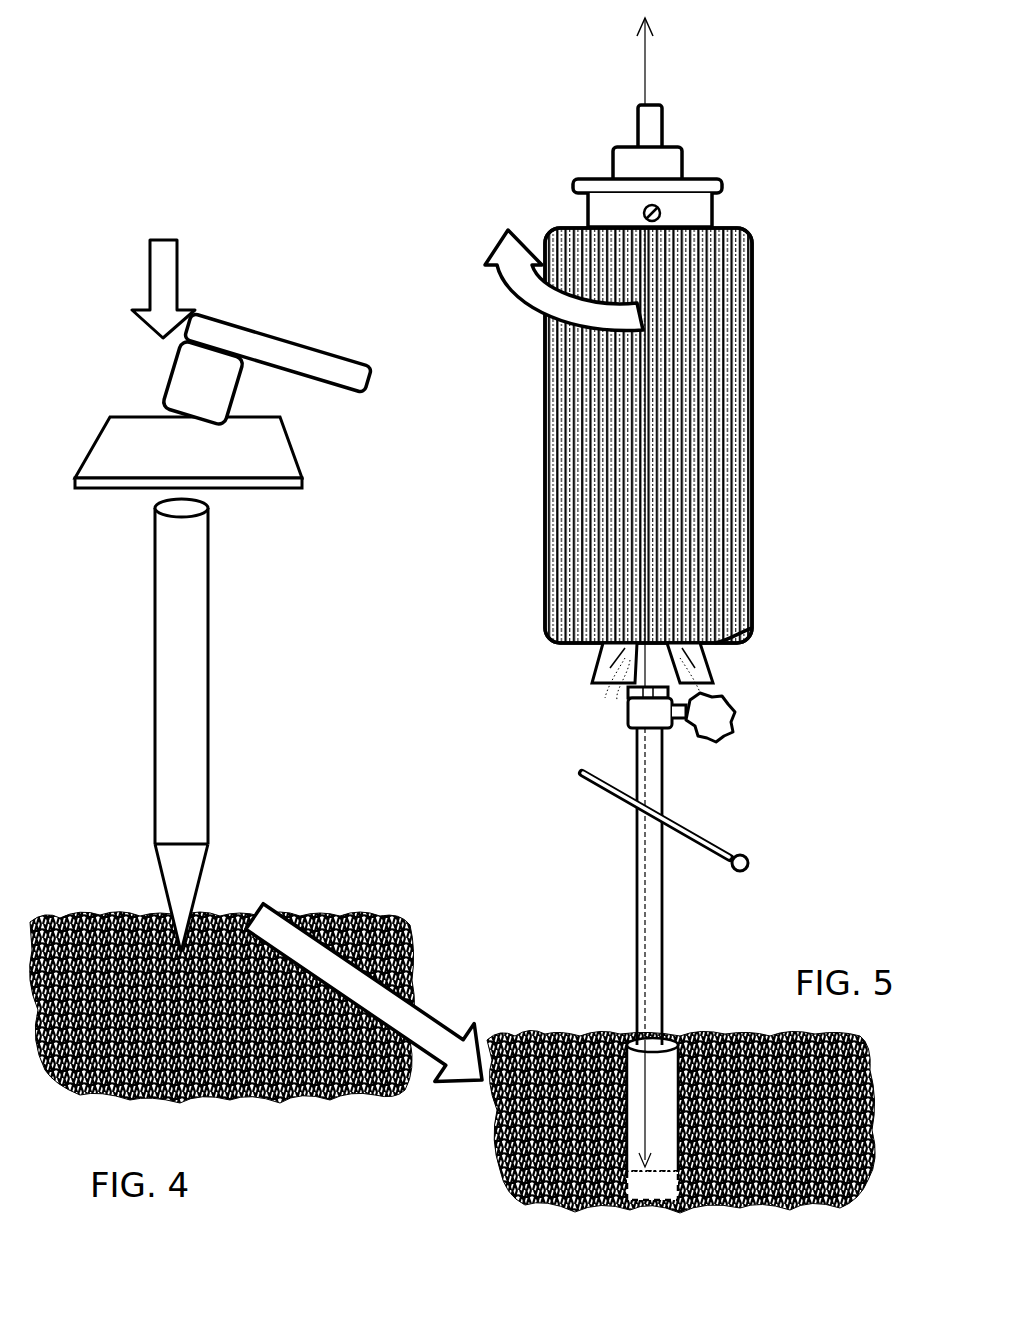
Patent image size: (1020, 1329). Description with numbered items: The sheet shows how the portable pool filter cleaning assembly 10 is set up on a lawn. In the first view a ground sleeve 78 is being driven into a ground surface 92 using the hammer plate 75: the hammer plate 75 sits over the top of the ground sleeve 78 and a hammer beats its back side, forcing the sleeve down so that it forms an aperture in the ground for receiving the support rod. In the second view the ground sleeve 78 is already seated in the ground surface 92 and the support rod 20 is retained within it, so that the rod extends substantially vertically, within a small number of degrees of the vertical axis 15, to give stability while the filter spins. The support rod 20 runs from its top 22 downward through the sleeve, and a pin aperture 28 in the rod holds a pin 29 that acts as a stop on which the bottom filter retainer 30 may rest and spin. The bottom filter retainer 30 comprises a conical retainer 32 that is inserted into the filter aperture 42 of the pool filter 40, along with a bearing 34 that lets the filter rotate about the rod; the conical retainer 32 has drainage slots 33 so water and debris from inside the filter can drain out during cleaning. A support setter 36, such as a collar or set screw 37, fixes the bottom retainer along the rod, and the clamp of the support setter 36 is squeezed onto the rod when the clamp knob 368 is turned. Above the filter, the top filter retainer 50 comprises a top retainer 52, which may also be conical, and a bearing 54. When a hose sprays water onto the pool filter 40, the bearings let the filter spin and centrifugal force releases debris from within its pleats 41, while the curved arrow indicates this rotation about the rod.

In FIG. 5, the portable pool filter cleaning assembly 10 is at (522, 136).
In FIG. 5, the vertical axis 15 is at (640, 59).
In FIG. 5, the support rod 20 is at (652, 760).
In FIG. 5, the top of the support rod 22 is at (650, 112).
In FIG. 5, the pin aperture 28 is at (642, 815).
In FIG. 5, the pin 29 is at (718, 864).
In FIG. 5, the bottom filter retainer 30 is at (592, 683).
In FIG. 5, the conical retainer 32 is at (597, 672).
In FIG. 5, the drainage slots 33 is at (713, 677).
In FIG. 5, the bearing 34 is at (693, 688).
In FIG. 5, the support setter 36 is at (628, 727).
In FIG. 5, the set screw 37 is at (628, 708).
In FIG. 5, the clamp knob 368 is at (727, 723).
In FIG. 5, the pool filter 40 is at (642, 435).
In FIG. 5, the pleats 41 is at (682, 455).
In FIG. 5, the filter aperture 42 is at (715, 647).
In FIG. 5, the top filter retainer 50 is at (602, 183).
In FIG. 5, the top retainer 52 is at (686, 184).
In FIG. 5, the bearing 54 is at (675, 158).
In FIG. 4, the hammer plate 75 is at (143, 427).
In FIG. 5, the ground sleeve 78 is at (632, 1036).
In FIG. 4, the ground sleeve 78 is at (178, 581).
In FIG. 5, the ground surface 92 is at (540, 1032).
In FIG. 4, the ground surface 92 is at (130, 918).